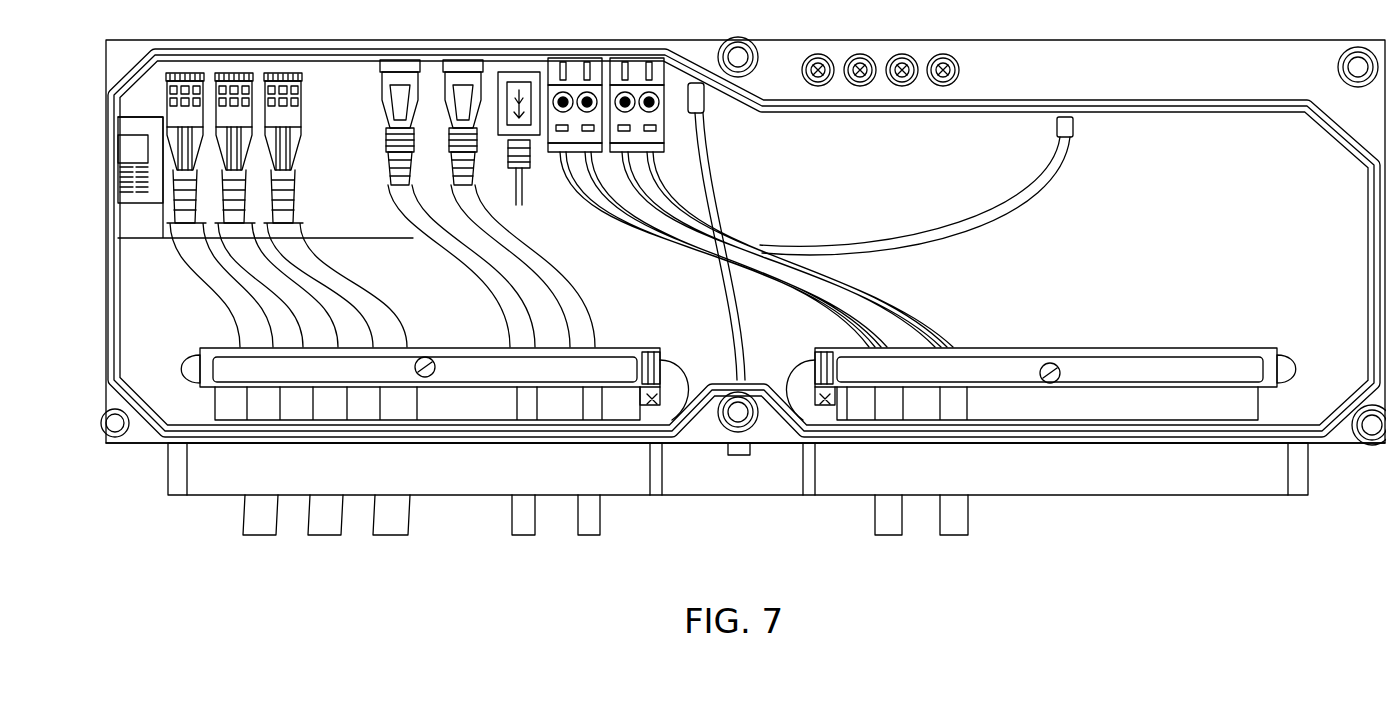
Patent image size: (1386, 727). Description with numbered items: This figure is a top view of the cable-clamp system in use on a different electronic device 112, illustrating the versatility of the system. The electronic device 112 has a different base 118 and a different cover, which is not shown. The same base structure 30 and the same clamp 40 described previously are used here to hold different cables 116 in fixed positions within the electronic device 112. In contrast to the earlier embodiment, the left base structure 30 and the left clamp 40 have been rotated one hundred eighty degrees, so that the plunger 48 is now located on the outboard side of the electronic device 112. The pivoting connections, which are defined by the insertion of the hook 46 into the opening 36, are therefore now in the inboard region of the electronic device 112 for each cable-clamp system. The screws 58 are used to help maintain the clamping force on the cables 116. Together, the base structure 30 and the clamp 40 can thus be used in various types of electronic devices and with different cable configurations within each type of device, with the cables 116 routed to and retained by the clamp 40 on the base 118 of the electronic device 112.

The electronic device 112 is at (104, 164).
The cables 116 is at (207, 283).
The plunger 48 is at (185, 355).
The screws 58 is at (425, 360).
The clamp 40 is at (240, 372).
The hook 46 is at (693, 378).
The base structure 30 is at (650, 402).
The opening 36 is at (755, 385).
The base 118 is at (1352, 445).